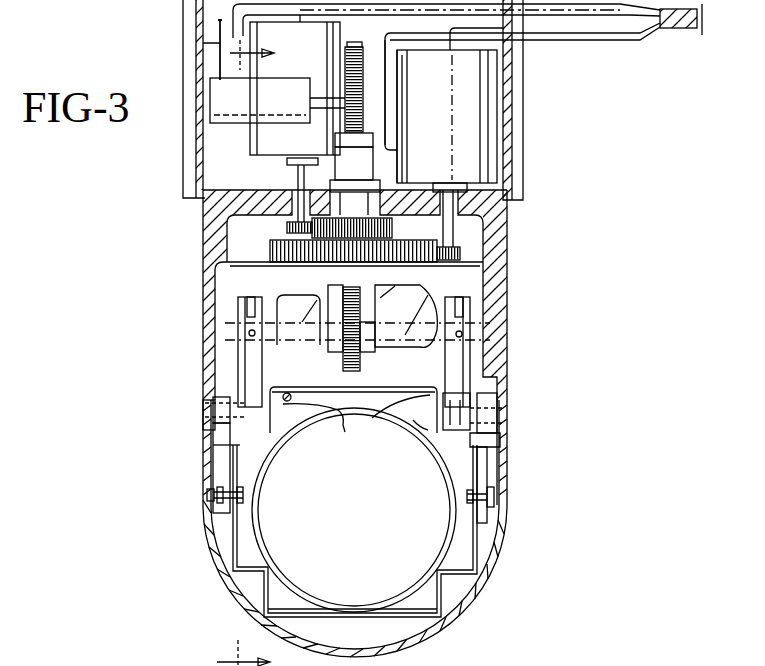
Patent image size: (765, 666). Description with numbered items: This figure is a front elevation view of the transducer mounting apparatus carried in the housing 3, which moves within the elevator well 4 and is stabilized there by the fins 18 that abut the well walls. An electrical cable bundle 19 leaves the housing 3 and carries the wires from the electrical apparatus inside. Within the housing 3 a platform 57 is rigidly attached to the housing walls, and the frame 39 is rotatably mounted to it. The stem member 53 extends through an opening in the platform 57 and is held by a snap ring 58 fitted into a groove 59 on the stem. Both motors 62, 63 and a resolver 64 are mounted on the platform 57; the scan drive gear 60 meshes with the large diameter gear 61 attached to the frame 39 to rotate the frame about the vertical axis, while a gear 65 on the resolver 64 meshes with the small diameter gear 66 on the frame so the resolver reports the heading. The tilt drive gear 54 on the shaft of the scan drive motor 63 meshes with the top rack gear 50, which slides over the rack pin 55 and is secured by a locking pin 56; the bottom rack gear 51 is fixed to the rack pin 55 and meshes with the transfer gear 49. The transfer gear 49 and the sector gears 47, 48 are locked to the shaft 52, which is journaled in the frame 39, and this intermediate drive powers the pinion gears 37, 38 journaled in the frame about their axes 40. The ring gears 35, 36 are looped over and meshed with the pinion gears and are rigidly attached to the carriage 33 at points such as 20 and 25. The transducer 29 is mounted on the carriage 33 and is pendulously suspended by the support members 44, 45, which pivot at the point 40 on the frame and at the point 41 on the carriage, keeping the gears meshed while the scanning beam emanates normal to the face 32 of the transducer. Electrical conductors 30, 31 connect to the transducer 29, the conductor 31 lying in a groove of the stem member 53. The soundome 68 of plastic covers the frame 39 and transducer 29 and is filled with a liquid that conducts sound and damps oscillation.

The housing 3 is at (197, 157).
The elevator well 4 is at (228, 50).
The fins 18 is at (520, 105).
The electrical cable bundle 19 is at (684, 30).
The attachment point 20 is at (280, 420).
The attachment point 25 is at (422, 425).
The transducer 29 is at (387, 610).
The electrical conductor 30 is at (340, 412).
The electrical conductor 31 is at (392, 400).
The face of transducer 32 is at (427, 540).
The carriage 33 is at (337, 581).
The ring gear 35 is at (270, 388).
The ring gear 36 is at (452, 398).
The pinion gear 37 is at (212, 477).
The pinion gear 38 is at (470, 430).
The frame 39 is at (310, 294).
The pinion gear axis 40 is at (203, 427).
The ring gear axis 41 is at (213, 497).
The support member 44 is at (230, 433).
The support member 45 is at (487, 463).
The sector gear 47 is at (235, 362).
The sector gear 48 is at (462, 373).
The transfer gear 49 is at (363, 360).
The top rack gear 50 is at (365, 125).
The bottom rack gear 51 is at (360, 286).
The shaft 52 is at (415, 330).
The stem member 53 is at (330, 168).
The tilt drive gear 54 is at (345, 113).
The rack pin 55 is at (345, 48).
The locking pin 56 is at (358, 46).
The platform 57 is at (500, 272).
The snap ring 58 is at (380, 183).
The groove 59 is at (373, 175).
The scan drive gear 60 is at (460, 252).
The large diameter gear 61 is at (205, 250).
The motor 62 is at (488, 163).
The scan drive motor 63 is at (230, 115).
The resolver 64 is at (312, 49).
The gear 65 is at (287, 228).
The small diameter gear 66 is at (385, 232).
The soundome 68 is at (468, 603).